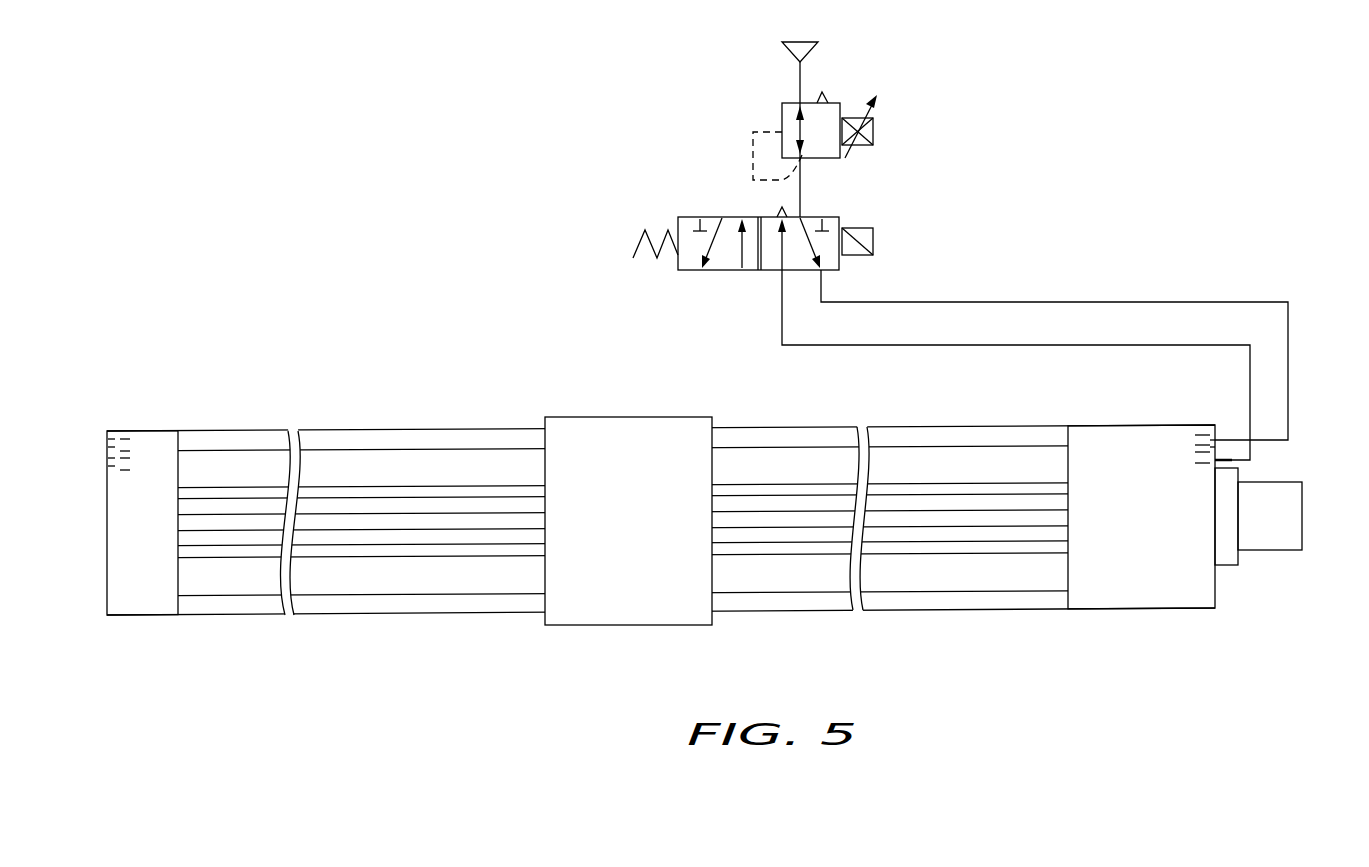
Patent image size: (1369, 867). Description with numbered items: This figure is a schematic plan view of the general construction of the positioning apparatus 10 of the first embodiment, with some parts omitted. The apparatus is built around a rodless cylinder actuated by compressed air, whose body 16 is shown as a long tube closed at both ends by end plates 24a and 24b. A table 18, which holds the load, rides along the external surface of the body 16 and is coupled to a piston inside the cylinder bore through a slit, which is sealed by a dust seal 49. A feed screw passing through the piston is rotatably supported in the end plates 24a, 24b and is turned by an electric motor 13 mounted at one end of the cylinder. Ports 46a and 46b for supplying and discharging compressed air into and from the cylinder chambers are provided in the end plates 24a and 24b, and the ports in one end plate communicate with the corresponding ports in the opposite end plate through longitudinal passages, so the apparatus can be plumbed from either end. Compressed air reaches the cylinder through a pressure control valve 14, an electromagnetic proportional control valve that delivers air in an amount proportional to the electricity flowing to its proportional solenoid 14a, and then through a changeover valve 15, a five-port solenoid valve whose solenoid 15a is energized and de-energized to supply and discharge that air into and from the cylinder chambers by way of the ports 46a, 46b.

The positioning apparatus 10 is at (700, 501).
The electric motor 13 is at (1280, 552).
The pressure control valve 14 is at (822, 105).
The proportional solenoid 14a is at (868, 128).
The changeover valve 15 is at (770, 204).
The solenoid 15a is at (870, 240).
The body 16 is at (408, 605).
The table 18 is at (628, 600).
The end plate 24a is at (1137, 597).
The end plate 24b is at (145, 607).
The port 46a is at (108, 447).
The port 46b is at (108, 467).
The dust seal 49 is at (960, 523).